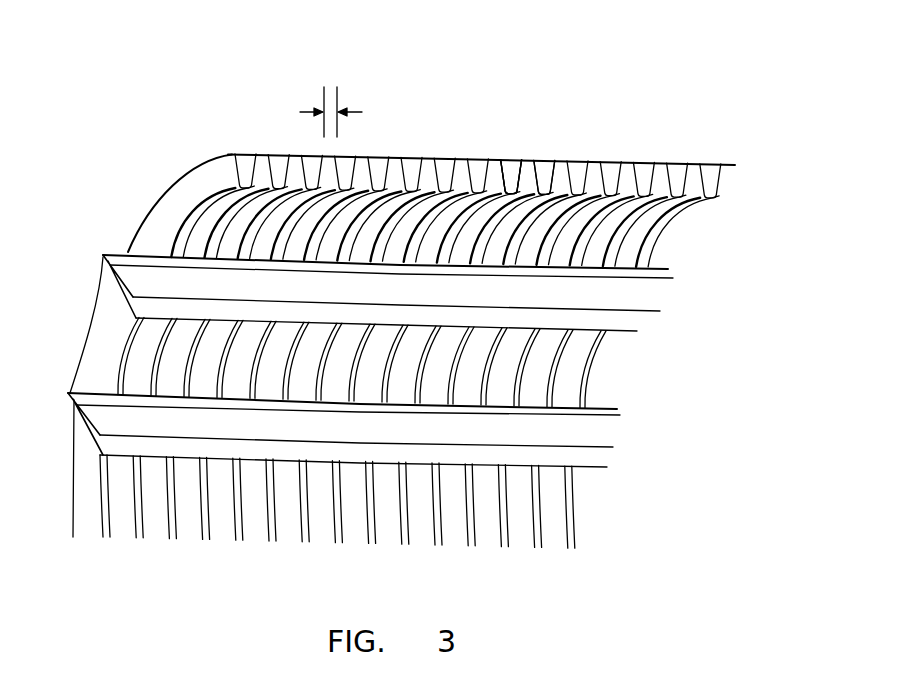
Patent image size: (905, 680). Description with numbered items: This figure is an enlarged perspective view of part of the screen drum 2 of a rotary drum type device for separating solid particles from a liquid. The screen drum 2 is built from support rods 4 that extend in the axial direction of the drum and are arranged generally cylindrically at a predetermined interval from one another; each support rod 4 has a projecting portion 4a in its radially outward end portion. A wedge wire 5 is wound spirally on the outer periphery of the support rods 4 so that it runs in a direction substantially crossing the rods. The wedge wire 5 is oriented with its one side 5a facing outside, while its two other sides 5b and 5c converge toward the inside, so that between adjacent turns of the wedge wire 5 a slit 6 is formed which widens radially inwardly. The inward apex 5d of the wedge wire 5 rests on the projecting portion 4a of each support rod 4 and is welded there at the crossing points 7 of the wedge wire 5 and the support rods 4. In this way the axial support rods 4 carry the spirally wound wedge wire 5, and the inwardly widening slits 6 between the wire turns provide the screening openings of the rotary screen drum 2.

The screen drum 2 is at (625, 131).
The support rods 4 is at (613, 294).
The projecting portion 4a is at (100, 253).
The wedge wire 5 is at (445, 152).
The one side of wedge wire 5a is at (510, 158).
The side of wedge wire 5b is at (545, 165).
The side of wedge wire 5c is at (512, 172).
The inward apex 5d is at (510, 192).
The slit 6 is at (333, 86).
The crossing points 7 is at (170, 250).